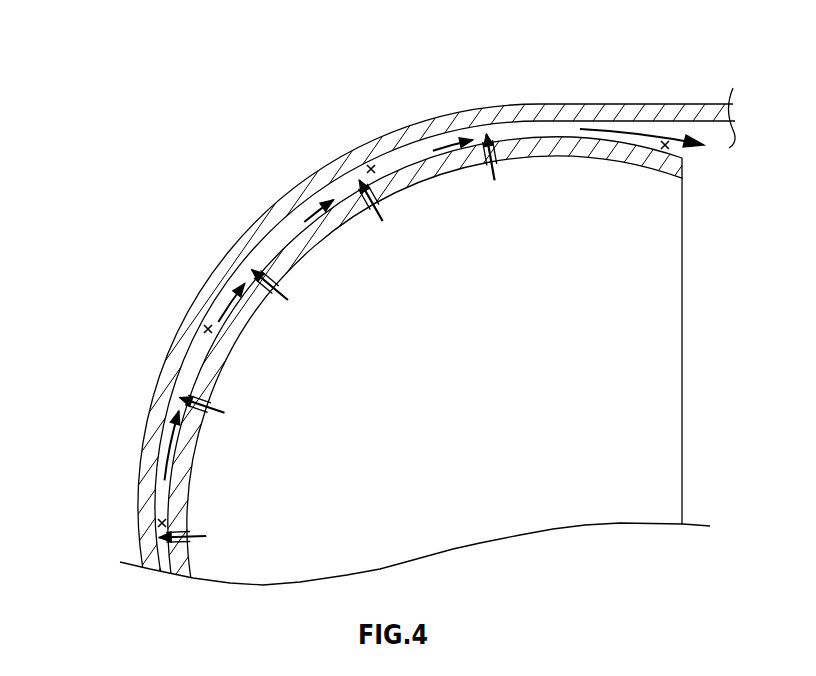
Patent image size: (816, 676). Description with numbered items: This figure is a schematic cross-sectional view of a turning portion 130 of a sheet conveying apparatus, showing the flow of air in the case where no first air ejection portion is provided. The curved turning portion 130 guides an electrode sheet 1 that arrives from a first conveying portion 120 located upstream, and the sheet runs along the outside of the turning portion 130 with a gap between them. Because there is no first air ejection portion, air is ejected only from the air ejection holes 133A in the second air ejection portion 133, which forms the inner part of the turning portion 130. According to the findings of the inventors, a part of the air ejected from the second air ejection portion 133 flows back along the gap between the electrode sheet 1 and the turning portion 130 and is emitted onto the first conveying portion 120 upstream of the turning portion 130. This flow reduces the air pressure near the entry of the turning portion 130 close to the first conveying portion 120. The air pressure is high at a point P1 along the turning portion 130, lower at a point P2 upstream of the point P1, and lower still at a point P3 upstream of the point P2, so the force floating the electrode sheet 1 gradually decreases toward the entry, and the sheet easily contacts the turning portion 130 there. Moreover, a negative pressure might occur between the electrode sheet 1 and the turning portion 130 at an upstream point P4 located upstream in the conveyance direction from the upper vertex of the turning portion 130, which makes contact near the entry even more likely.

The electrode sheet 1 is at (556, 104).
The first conveying portion 120 is at (713, 138).
The turning portion 130 is at (270, 240).
The second air ejection portion 133 is at (184, 394).
The air ejection holes 133A is at (172, 531).
The point P1 is at (166, 530).
The point P2 is at (203, 338).
The point P3 is at (379, 170).
The upstream point P4 is at (660, 145).